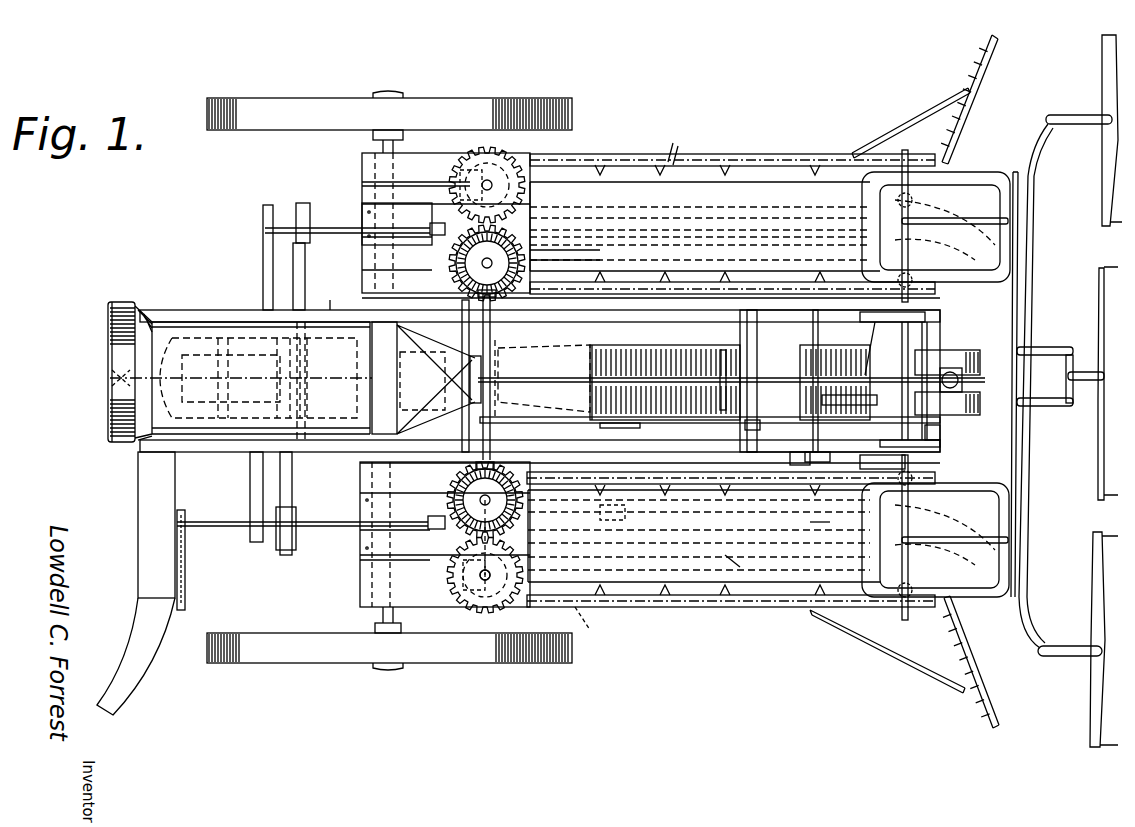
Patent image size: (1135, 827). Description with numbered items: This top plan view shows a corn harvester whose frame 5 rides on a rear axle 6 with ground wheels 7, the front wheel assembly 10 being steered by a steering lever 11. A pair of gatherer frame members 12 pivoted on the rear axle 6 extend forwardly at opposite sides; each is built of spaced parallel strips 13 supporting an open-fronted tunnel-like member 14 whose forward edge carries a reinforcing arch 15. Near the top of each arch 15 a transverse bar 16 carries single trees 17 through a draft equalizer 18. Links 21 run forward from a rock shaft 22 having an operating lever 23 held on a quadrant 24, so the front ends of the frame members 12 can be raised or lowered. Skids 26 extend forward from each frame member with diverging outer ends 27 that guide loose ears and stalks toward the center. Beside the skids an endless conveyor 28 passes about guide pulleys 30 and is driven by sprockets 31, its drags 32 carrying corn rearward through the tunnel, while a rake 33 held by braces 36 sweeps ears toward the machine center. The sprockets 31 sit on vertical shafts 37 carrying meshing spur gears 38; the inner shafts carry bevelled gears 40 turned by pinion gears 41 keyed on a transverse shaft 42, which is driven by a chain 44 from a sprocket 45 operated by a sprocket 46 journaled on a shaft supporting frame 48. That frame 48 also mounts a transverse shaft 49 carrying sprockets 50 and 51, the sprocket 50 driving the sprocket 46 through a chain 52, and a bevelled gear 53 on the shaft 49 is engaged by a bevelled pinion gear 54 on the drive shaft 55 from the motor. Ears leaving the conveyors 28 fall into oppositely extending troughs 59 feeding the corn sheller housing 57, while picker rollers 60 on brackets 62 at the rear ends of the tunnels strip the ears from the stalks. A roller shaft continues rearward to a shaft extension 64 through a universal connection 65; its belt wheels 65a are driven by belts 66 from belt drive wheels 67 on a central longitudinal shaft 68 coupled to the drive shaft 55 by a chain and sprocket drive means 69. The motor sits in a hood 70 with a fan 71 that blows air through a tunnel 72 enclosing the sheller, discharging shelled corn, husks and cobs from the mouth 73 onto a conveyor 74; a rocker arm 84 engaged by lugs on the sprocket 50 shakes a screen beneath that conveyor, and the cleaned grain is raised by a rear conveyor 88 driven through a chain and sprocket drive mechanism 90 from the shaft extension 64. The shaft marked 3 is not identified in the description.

The main shaft 3 is at (705, 346).
The frame 5 is at (592, 288).
The rear axle 6 is at (372, 140).
The ground wheels 7 is at (308, 103).
The front wheel assembly 10 is at (962, 380).
The steering lever 11 is at (915, 380).
The frame members 12 is at (418, 600).
The strips 13 is at (531, 480).
The tunnel-like member 14 is at (770, 195).
The reinforcing arch 15 is at (982, 175).
The transverse bar 16 is at (1023, 380).
The single trees 17 is at (1102, 190).
The draft equalizer 18 is at (1042, 347).
The links 21 is at (993, 227).
The rock shaft 22 is at (925, 420).
The operating lever 23 is at (800, 458).
The quadrant 24 is at (940, 445).
The skids 26 is at (945, 374).
The diverging outer ends 27 is at (1038, 182).
The endless conveyor 28 is at (672, 160).
The guide pulleys 30 is at (933, 178).
The sprockets 31 is at (485, 580).
The drags 32 is at (720, 160).
The rake 33 is at (980, 92).
The braces 36 is at (922, 112).
The shafts 37 is at (481, 582).
The spur gears 38 is at (508, 165).
The bevelled gears 40 is at (590, 258).
The pinion gears 41 is at (540, 298).
The transversely extending shaft 42 is at (500, 370).
The chain 44 is at (615, 428).
The sprocket 45 is at (753, 425).
The sprocket 46 is at (740, 567).
The shaft supporting frame 48 is at (790, 346).
The transversely extending shaft 49 is at (835, 317).
The sprocket 50 is at (905, 460).
The sprocket 51 is at (965, 400).
The chain 52 is at (820, 524).
The bevelled gear 53 is at (875, 300).
The bevelled pinion gear 54 is at (836, 390).
The drive shaft 55 is at (650, 378).
The corn sheller housing 57 is at (473, 360).
The troughs 59 is at (395, 368).
The picker rollers 60 is at (626, 375).
The brackets 62 is at (612, 512).
The shaft extension 64 is at (350, 234).
The universal connection 65 is at (433, 223).
The belt wheels 65a is at (313, 213).
The belts 66 is at (285, 472).
The belt drive wheels 67 is at (330, 300).
The longitudinally extending shaft 68 is at (234, 310).
The chain and sprocket drive means 69 is at (722, 405).
The hood 70 is at (170, 310).
The fan 71 is at (160, 380).
The tunnel 72 is at (548, 372).
The mouth 73 is at (600, 368).
The conveyor 74 is at (660, 430).
The rocker arm 84 is at (812, 460).
The conveyor 88 is at (143, 490).
The chain and sprocket drive mechanism 90 is at (182, 558).